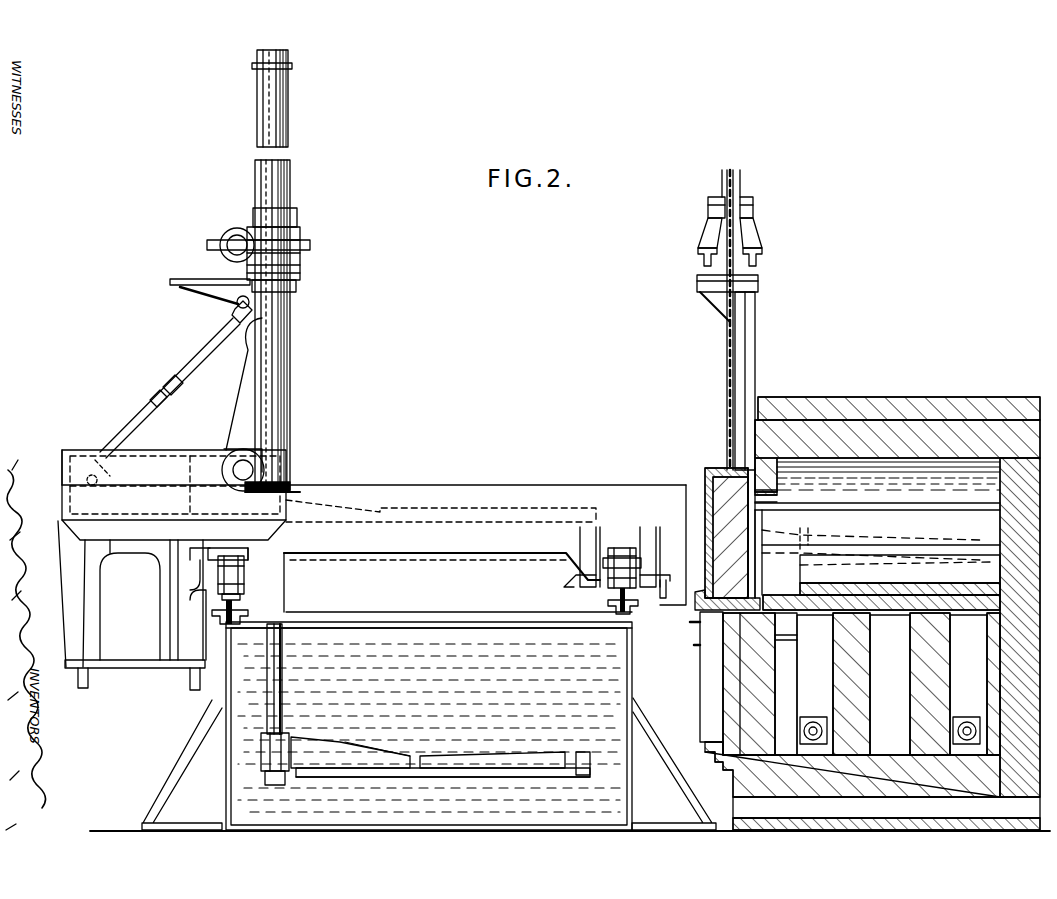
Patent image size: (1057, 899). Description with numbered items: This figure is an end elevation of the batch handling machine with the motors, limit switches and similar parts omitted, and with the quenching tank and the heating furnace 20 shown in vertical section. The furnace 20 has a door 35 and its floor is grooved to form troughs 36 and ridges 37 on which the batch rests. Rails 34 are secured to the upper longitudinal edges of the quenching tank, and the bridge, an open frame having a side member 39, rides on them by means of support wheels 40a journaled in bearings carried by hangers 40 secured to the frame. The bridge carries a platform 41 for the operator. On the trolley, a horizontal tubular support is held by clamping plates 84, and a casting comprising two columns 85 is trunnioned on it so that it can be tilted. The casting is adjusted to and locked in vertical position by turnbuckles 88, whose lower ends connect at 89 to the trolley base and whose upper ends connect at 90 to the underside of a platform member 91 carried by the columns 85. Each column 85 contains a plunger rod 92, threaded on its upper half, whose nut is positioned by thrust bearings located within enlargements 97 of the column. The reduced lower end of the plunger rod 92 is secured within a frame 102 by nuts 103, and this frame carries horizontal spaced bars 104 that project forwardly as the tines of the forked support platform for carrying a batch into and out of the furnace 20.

The heating furnace 20 is at (455, 636).
The rails 34 is at (248, 603).
The door 35 is at (705, 484).
The troughs 36 is at (884, 575).
The ridges 37 is at (945, 560).
The side member 39 is at (519, 485).
The hangers 40 is at (212, 590).
The support wheels 40a is at (220, 573).
The platform 41 is at (135, 668).
The clamping plates 84 is at (238, 457).
The columns 85 is at (291, 330).
The turnbuckles 88 is at (178, 392).
The lower connection of turnbuckle 89 is at (62, 478).
The upper connection of turnbuckle 90 is at (232, 306).
The platform member 91 is at (183, 292).
The plunger rod 92 is at (268, 692).
The enlargements 97 is at (300, 268).
The frame 102 is at (360, 755).
The nuts 103 is at (296, 773).
The horizontal spaced bars 104 is at (572, 770).